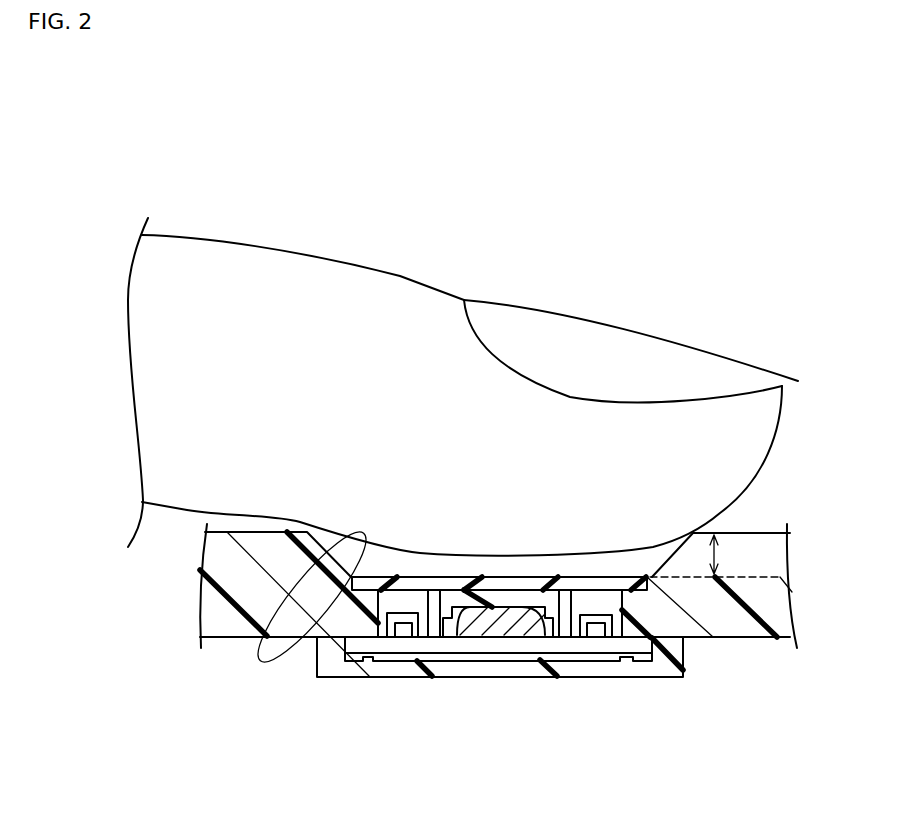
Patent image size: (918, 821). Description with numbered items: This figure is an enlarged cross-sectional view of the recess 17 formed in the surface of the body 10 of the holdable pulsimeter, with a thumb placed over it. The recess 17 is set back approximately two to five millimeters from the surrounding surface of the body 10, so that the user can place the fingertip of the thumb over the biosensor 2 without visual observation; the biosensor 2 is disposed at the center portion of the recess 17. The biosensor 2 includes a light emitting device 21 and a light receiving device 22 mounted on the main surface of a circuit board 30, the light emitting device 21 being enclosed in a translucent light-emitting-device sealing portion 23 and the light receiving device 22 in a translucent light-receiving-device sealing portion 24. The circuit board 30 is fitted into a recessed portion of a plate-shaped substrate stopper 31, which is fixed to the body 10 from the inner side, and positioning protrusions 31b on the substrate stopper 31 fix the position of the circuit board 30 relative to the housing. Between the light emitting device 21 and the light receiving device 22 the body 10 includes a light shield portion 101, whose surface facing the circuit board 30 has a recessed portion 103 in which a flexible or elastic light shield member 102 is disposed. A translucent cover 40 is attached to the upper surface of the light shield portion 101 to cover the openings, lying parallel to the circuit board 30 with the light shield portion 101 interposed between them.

The biosensor 2 is at (716, 673).
The body 10 is at (240, 526).
The recess 17 is at (303, 604).
The light emitting device 21 is at (403, 627).
The light receiving device 22 is at (597, 627).
The light-emitting-device sealing portion 23 is at (406, 630).
The light-receiving-device sealing portion 24 is at (610, 632).
The circuit board 30 is at (484, 646).
The substrate stopper 31 is at (667, 674).
The positioning protrusions 31b is at (362, 658).
The translucent cover 40 is at (588, 582).
The light shield portion 101 is at (557, 598).
The light shield member 102 is at (502, 613).
The recessed portion 103 is at (464, 632).